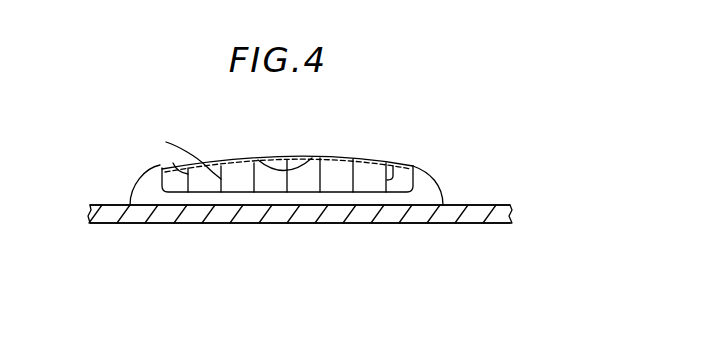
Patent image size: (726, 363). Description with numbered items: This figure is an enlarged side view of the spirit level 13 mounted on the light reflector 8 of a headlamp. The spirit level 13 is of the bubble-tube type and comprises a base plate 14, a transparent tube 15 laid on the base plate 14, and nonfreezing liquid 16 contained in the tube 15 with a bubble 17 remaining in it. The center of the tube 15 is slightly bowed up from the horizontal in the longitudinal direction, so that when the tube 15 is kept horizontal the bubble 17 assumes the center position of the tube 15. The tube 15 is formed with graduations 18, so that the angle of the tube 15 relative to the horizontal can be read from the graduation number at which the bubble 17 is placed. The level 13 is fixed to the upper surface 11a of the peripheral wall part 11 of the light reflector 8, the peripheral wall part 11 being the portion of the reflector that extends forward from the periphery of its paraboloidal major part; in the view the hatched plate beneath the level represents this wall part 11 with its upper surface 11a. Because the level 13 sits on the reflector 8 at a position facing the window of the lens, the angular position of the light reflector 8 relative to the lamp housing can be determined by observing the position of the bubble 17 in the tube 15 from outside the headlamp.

The light reflector 8 is at (497, 224).
The peripheral wall part 11 is at (160, 210).
The upper surface 11a is at (485, 205).
The spirit level 13 is at (289, 152).
The base plate 14 is at (142, 183).
The transparent tube 15 is at (240, 165).
The nonfreezing liquid 16 is at (336, 163).
The bubble 17 is at (298, 157).
The graduations 18 is at (173, 165).